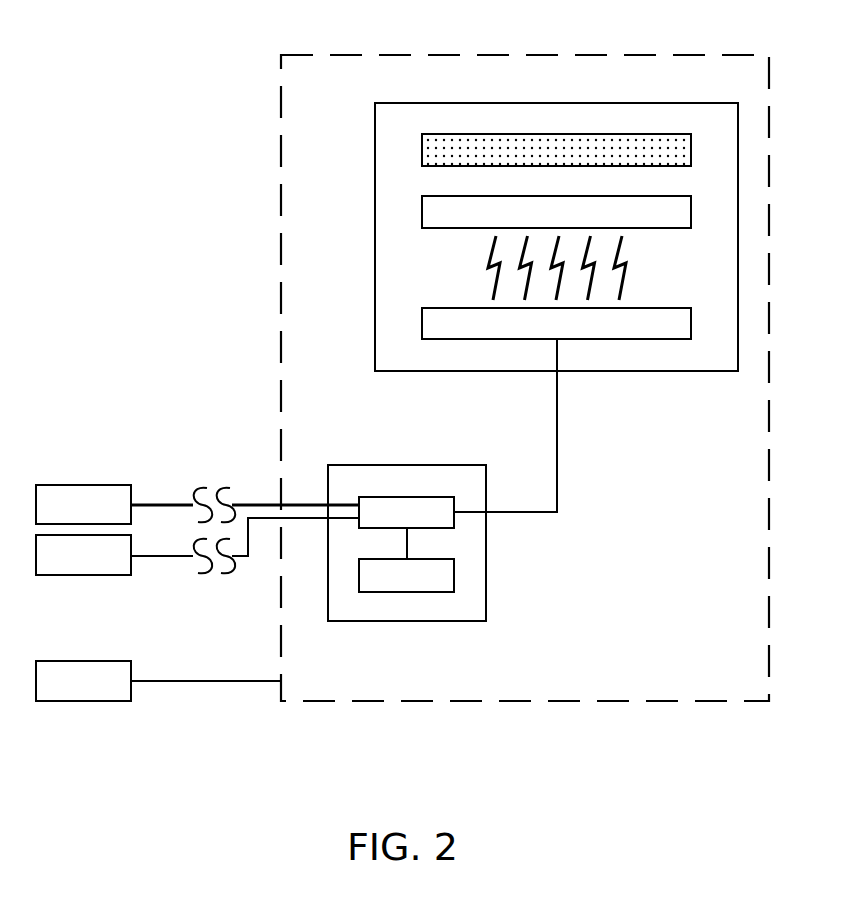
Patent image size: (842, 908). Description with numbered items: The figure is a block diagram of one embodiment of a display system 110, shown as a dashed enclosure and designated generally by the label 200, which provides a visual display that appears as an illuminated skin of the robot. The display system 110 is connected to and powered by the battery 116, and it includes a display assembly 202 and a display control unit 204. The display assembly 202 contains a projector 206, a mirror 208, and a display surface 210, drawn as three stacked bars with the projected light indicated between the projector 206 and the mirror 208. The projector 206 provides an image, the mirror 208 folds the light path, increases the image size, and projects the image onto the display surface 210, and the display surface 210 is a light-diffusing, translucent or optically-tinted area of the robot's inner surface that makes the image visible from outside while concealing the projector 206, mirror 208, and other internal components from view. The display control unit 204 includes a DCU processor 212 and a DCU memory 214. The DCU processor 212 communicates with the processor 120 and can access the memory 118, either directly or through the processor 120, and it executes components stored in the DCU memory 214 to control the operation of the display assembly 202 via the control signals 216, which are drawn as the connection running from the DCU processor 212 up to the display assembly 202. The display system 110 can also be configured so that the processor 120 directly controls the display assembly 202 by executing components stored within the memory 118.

The display system 110 is at (226, 95).
The light source configuration 200 is at (383, 810).
The display assembly 202 is at (407, 103).
The display control unit 204 is at (413, 621).
The projector 206 is at (422, 320).
The mirror 208 is at (422, 207).
The display surface 210 is at (422, 147).
The DCU processor 212 is at (407, 497).
The DCU memory 214 is at (407, 592).
The control signals 216 is at (557, 440).
The battery 116 is at (68, 690).
The memory 118 is at (68, 565).
The processor 120 is at (68, 513).